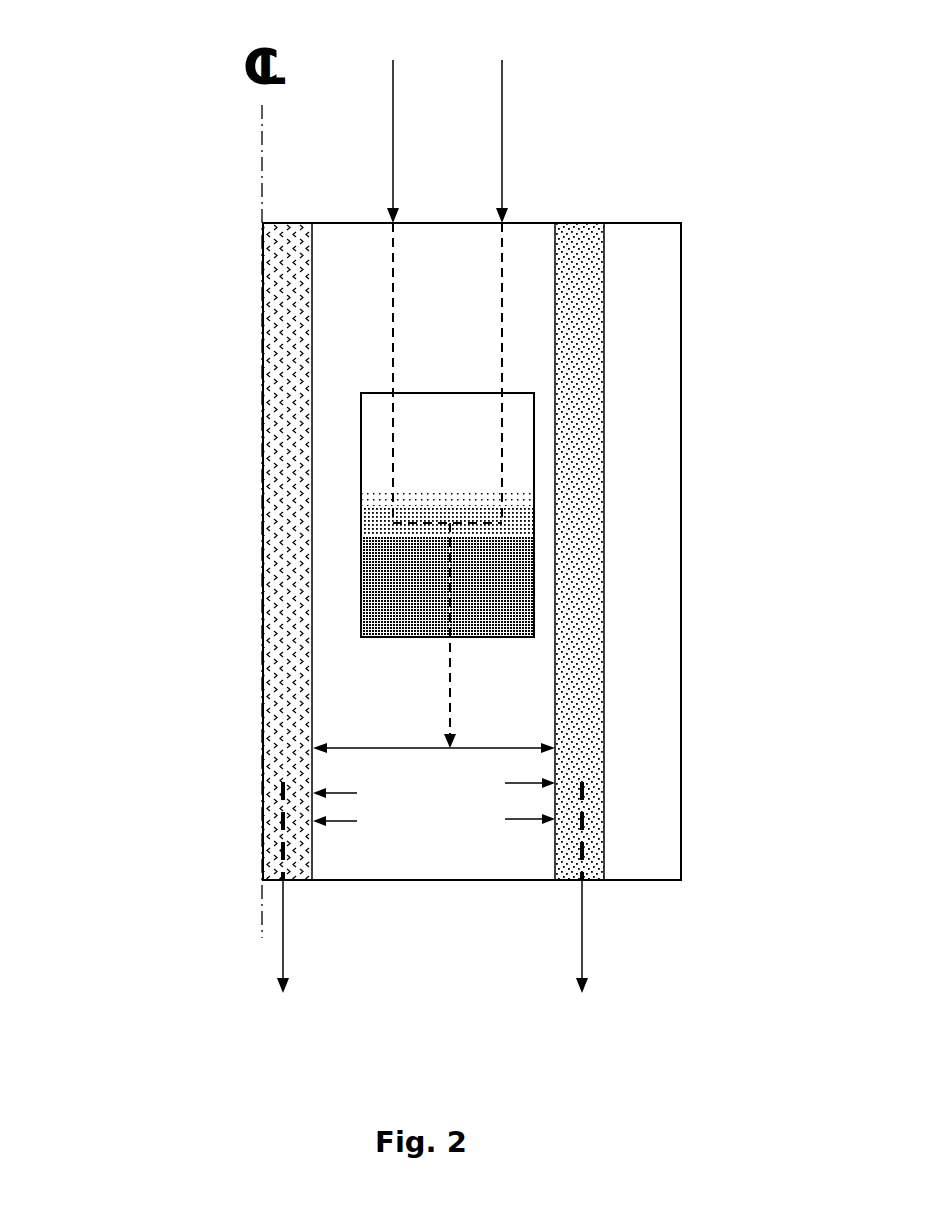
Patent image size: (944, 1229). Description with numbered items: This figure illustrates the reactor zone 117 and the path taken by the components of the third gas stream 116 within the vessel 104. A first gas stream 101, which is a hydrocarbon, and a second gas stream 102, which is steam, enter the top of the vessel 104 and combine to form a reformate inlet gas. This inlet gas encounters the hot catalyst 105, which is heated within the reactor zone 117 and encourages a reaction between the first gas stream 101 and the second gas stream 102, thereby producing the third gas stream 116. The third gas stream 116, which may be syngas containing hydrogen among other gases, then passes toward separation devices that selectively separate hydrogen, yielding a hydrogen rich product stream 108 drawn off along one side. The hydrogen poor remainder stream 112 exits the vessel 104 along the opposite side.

The first gas stream 101 is at (500, 265).
The second gas stream 102 is at (385, 265).
The vessel 104 is at (684, 487).
The catalyst 105 is at (447, 472).
The hydrogen rich product stream 108 is at (579, 629).
The remainder stream 112 is at (284, 629).
The third gas stream 116 is at (434, 638).
The reactor zone 117 is at (392, 564).